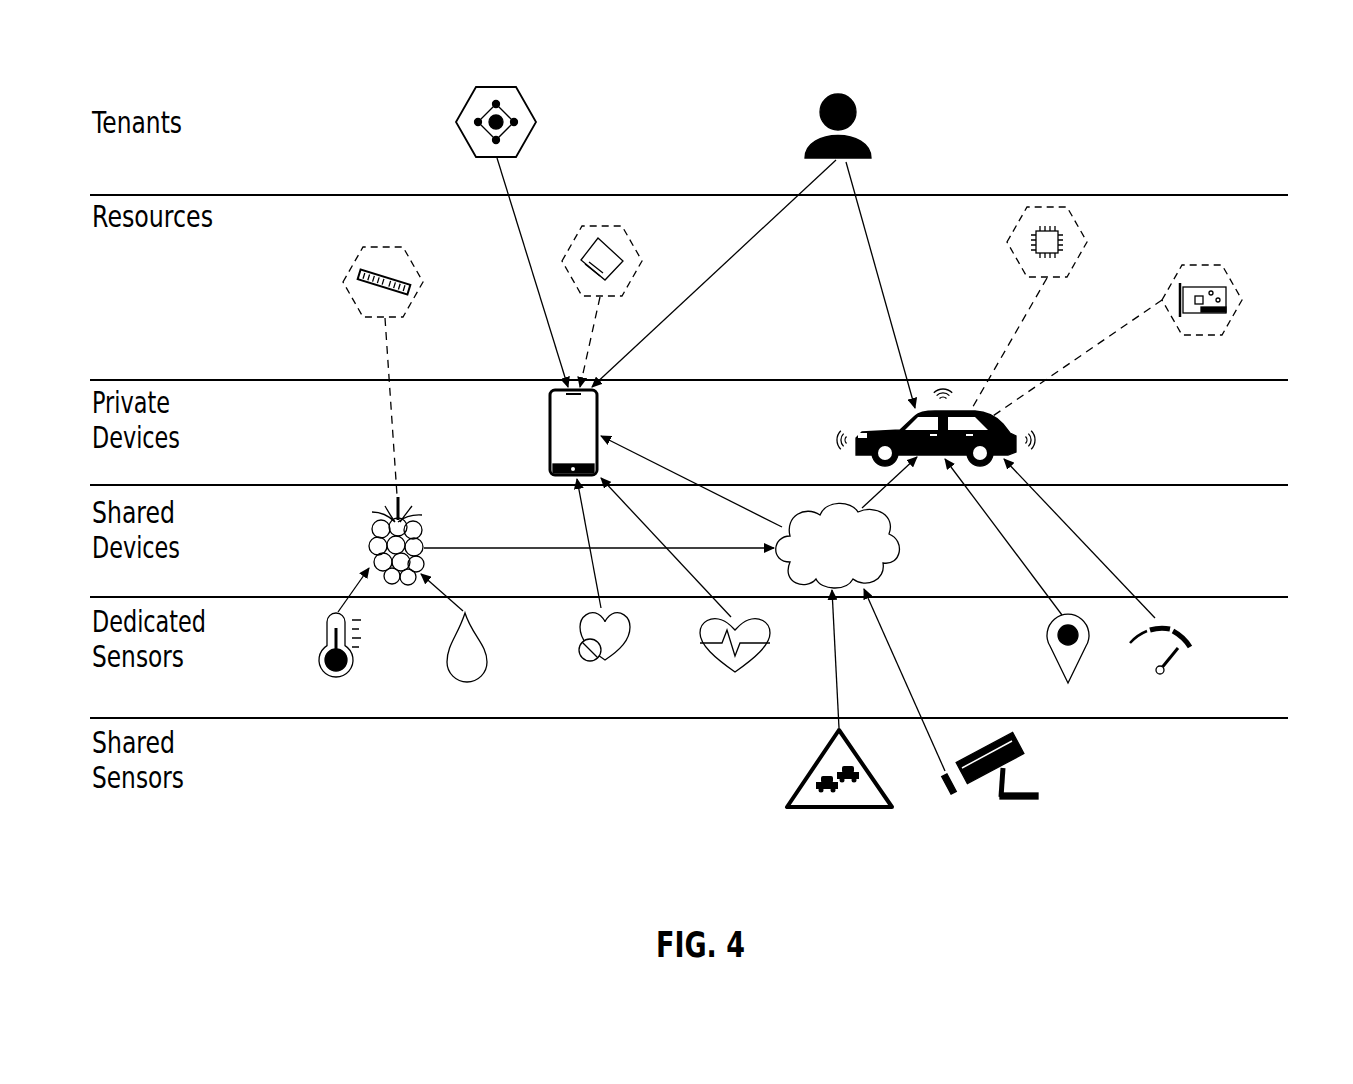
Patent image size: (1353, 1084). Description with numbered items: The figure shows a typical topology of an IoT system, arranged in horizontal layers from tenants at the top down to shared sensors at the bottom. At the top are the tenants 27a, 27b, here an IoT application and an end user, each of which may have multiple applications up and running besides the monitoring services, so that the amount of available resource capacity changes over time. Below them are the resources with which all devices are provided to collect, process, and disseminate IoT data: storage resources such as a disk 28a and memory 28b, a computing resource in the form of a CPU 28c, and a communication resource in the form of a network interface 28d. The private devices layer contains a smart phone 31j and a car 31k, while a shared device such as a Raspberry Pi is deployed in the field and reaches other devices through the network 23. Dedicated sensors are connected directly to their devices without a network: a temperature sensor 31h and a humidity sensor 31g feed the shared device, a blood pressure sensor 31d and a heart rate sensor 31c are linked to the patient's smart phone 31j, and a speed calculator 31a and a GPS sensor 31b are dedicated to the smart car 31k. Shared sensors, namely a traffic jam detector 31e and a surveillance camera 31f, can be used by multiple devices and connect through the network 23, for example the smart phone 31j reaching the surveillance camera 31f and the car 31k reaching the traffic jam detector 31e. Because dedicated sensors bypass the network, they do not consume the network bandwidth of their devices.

The tenant 27a is at (499, 87).
The tenant 27b is at (840, 93).
The storage resource 28a is at (604, 226).
The storage resource 28b is at (356, 301).
The computing resource 28c is at (1048, 207).
The communication resource 28d is at (1204, 265).
The smart phone 31j is at (549, 440).
The car 31k is at (881, 428).
The network 23 is at (894, 540).
The dedicated sensor 31h is at (326, 636).
The dedicated sensor 31g is at (483, 640).
The blood pressure sensor 31d is at (623, 612).
The heart rate sensor 31c is at (740, 614).
The global positioning system (GPS) sensor 31b is at (1048, 652).
The speed calculator 31a is at (1194, 638).
The traffic jam detector 31e is at (806, 778).
The surveillance camera 31f is at (1022, 760).